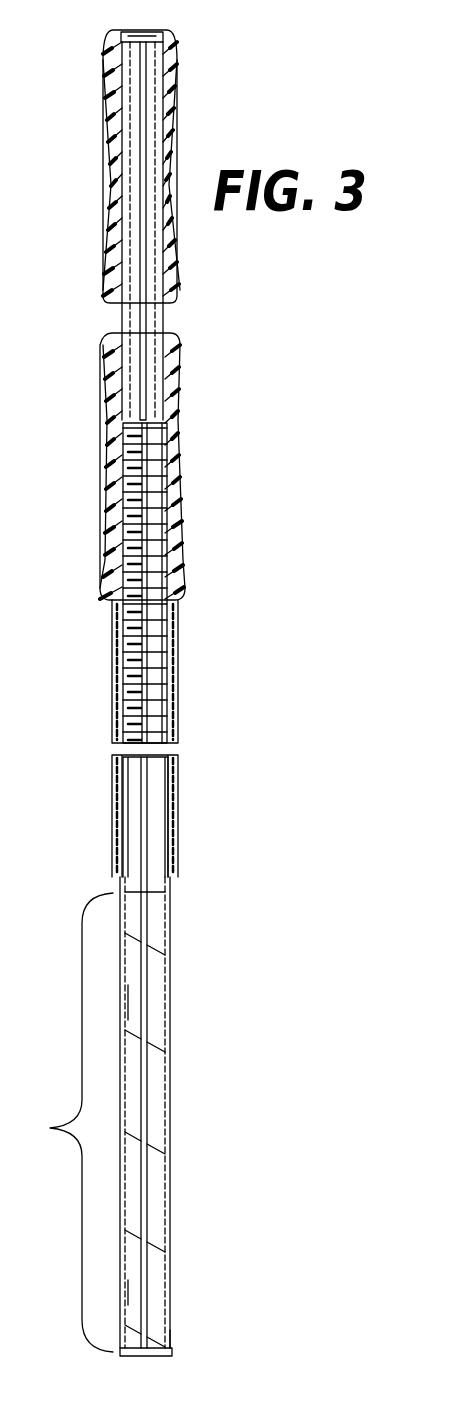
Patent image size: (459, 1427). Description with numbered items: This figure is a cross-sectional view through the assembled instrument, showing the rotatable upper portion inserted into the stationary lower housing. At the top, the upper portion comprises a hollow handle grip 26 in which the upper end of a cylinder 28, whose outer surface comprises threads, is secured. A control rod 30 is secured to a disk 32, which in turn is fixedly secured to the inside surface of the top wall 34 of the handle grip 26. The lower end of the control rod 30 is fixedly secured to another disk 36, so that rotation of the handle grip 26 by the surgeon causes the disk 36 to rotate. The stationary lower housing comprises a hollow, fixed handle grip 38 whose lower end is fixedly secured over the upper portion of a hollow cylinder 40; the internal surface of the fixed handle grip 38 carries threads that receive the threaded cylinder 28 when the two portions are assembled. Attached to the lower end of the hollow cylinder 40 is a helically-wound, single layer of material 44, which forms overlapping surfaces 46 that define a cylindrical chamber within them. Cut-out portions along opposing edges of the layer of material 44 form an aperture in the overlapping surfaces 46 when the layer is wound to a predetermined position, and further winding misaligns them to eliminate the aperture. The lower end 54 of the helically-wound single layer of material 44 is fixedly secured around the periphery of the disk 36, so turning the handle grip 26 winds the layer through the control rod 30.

The hollow handle grip 26 is at (172, 137).
The cylinder 28 is at (167, 520).
The control rod 30 is at (147, 326).
The disk 32 is at (153, 54).
The top wall 34 is at (146, 34).
The disk 36 is at (150, 1356).
The fixed handle grip 38 is at (178, 450).
The hollow cylinder 40 is at (178, 765).
The helically-wound single layer of material 44 is at (86, 1114).
The overlapping surfaces 46 is at (158, 1262).
The lower end 54 is at (168, 1345).